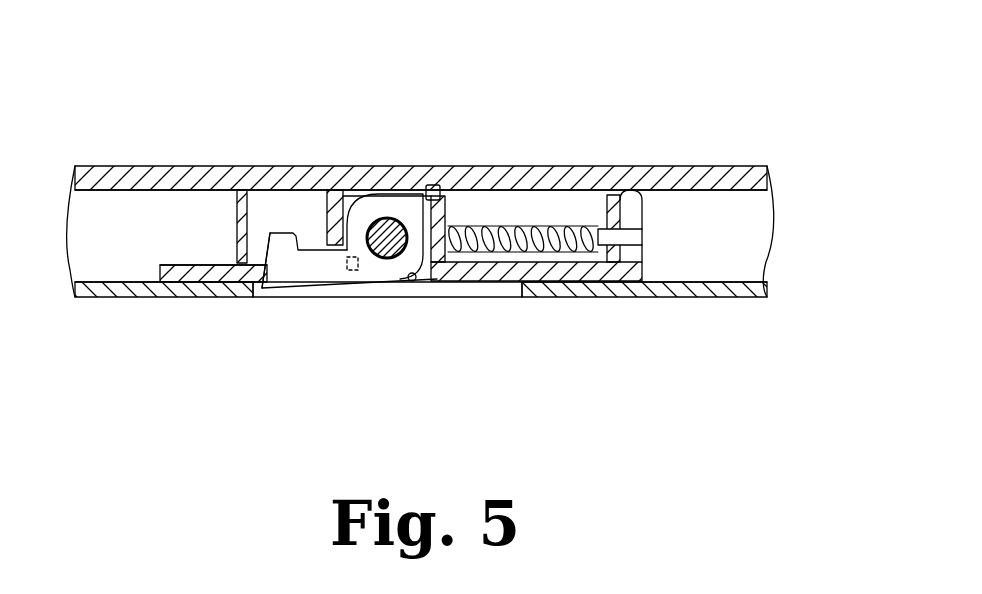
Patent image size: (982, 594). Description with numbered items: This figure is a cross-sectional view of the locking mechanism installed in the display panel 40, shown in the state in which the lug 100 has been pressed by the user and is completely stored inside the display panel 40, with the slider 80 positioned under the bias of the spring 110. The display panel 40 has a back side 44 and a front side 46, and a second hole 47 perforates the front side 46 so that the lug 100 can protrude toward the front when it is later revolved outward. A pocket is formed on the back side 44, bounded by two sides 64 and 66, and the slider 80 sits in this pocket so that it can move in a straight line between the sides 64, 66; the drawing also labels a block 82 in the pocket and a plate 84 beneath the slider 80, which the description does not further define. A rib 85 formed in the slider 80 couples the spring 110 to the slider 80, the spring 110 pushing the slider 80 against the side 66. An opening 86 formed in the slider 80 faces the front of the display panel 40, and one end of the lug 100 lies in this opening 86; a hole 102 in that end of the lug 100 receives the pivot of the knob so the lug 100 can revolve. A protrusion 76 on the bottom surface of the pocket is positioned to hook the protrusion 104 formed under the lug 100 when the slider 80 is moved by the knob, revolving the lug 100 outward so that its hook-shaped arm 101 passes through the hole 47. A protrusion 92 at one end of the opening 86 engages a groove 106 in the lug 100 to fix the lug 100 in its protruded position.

The display panel 40 is at (358, 31).
The back side 44 is at (726, 166).
The front side 46 is at (678, 290).
The second hole 47 is at (480, 292).
The side of pocket 64 is at (250, 192).
The side of pocket 66 is at (606, 197).
The protrusion 76 is at (436, 186).
The slider 80 is at (183, 252).
The stop block 82 is at (195, 276).
The base plate 84 is at (580, 272).
The rib 85 is at (637, 229).
The opening 86 is at (438, 272).
The protrusion 92 is at (412, 282).
The lug 100 is at (287, 303).
The hook-shaped arm 101 is at (262, 298).
The hole 102 is at (383, 218).
The protrusion 104 is at (396, 194).
The groove 106 is at (352, 272).
The spring 110 is at (506, 224).